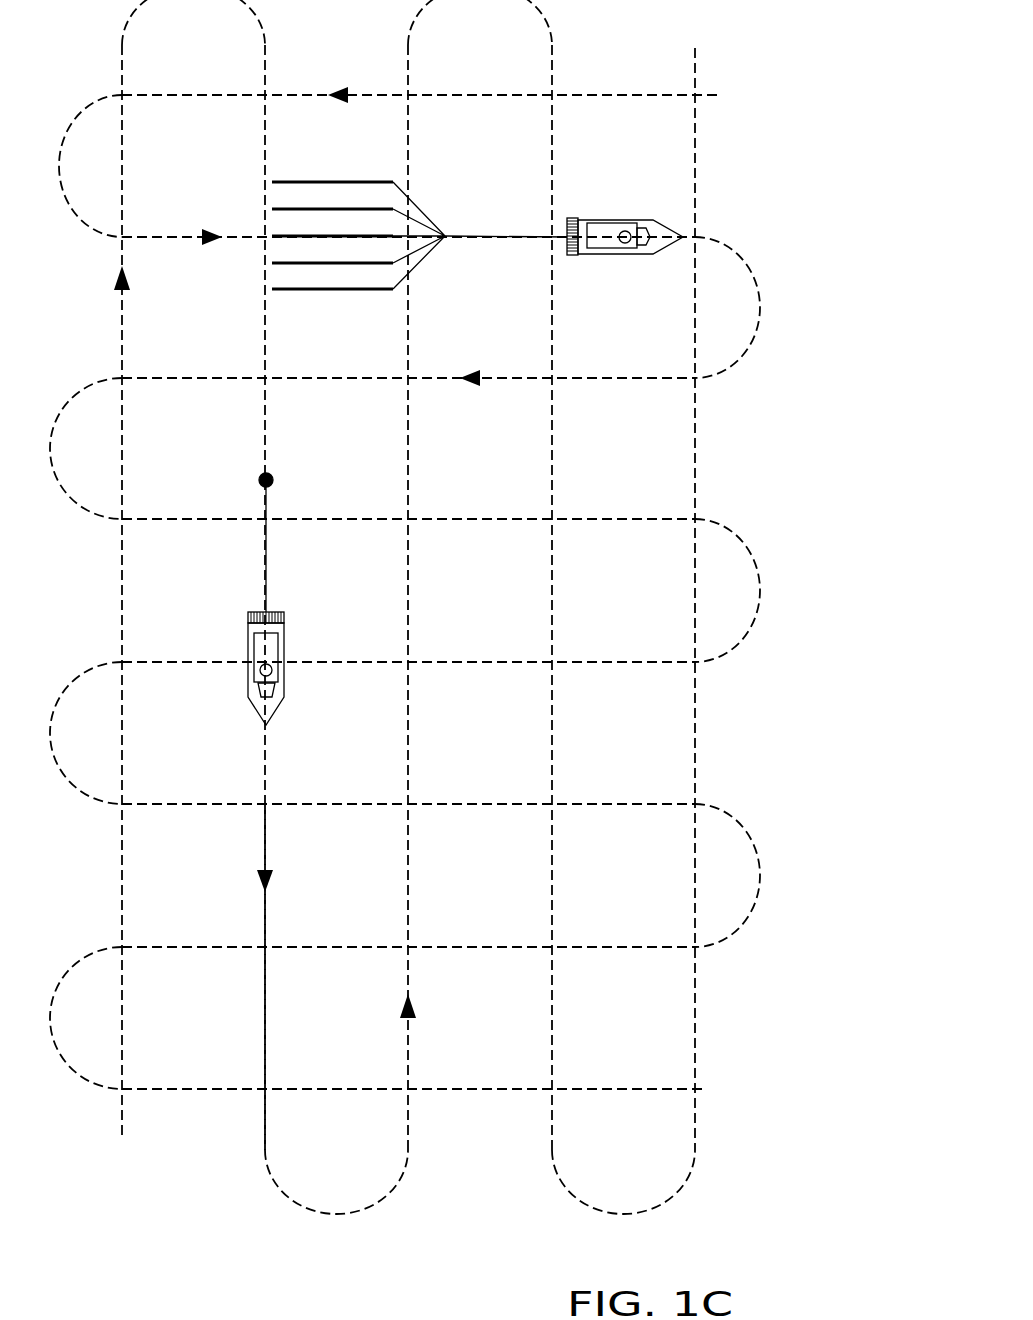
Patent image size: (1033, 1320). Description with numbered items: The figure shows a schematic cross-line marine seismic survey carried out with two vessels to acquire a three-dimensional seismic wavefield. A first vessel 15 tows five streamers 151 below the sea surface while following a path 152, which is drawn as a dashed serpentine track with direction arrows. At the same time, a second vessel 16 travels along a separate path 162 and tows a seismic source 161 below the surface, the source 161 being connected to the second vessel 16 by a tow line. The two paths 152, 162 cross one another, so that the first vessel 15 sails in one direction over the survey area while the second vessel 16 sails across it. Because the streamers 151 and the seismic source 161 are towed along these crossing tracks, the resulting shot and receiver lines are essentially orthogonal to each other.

The first vessel 15 is at (614, 220).
The streamers 151 is at (320, 212).
The path 152 is at (607, 379).
The second vessel 16 is at (248, 641).
The seismic source 161 is at (274, 482).
The path 162 is at (267, 1010).